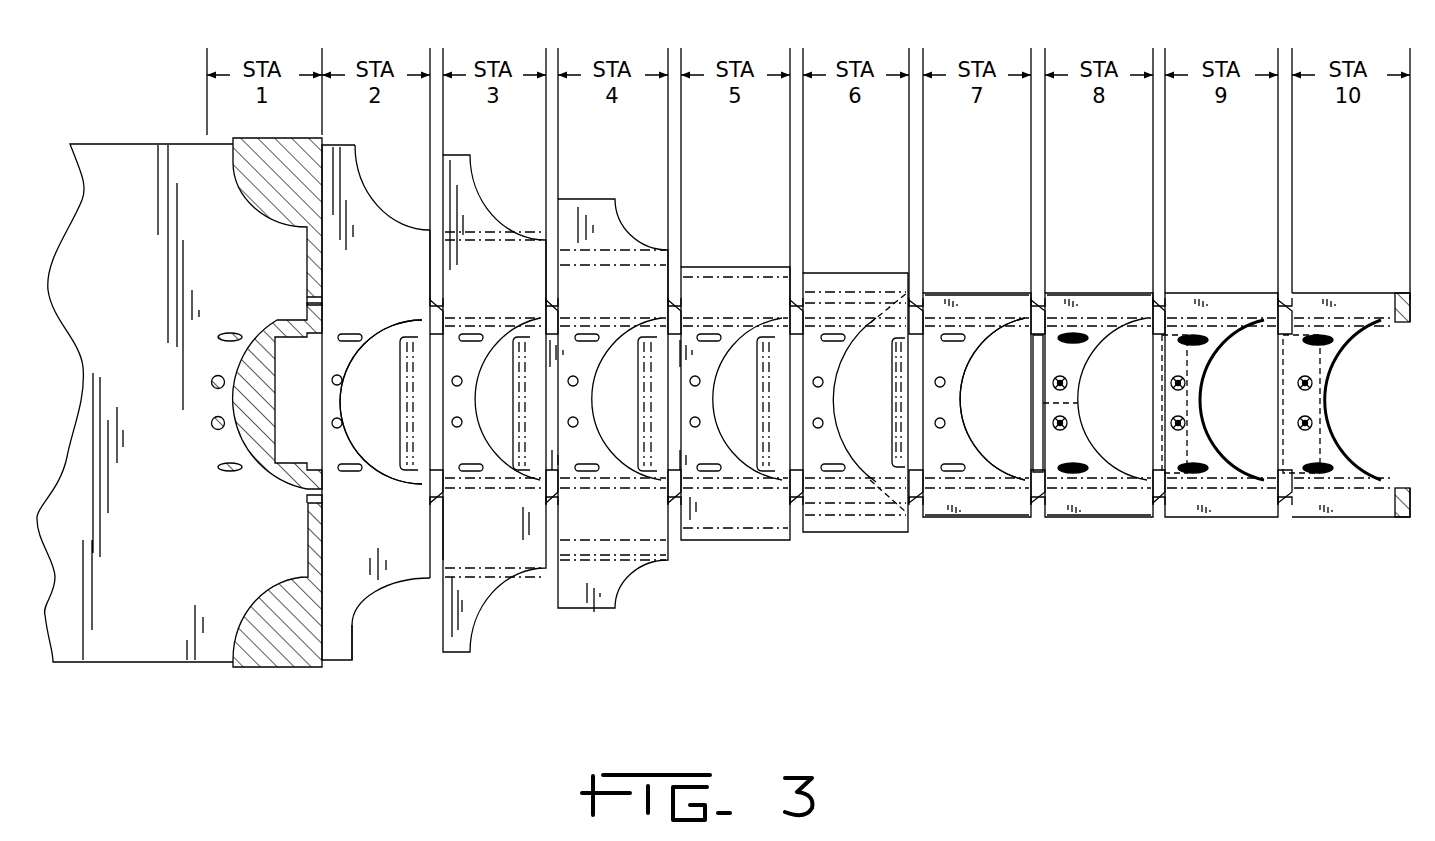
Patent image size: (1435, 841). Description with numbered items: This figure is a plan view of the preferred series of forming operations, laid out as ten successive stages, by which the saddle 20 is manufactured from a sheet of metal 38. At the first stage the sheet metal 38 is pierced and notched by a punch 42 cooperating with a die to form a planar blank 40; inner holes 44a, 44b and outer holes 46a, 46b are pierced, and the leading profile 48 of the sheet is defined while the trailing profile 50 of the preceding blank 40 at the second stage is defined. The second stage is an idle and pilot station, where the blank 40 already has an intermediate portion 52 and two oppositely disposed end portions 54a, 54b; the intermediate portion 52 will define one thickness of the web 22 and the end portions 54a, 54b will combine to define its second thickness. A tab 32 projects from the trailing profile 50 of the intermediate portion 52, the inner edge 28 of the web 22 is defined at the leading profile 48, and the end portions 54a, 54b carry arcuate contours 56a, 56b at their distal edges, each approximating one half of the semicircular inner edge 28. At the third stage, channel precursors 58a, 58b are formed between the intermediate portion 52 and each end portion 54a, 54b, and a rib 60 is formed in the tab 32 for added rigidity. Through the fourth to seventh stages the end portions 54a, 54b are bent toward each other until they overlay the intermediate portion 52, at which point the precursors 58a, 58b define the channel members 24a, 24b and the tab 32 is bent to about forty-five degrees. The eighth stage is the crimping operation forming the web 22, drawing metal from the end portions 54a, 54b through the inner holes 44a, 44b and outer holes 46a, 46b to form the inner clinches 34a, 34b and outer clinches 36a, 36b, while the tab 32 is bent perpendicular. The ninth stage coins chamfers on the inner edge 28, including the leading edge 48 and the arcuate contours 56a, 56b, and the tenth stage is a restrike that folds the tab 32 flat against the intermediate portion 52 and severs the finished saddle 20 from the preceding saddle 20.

The saddle 20 is at (1342, 533).
The web 22 is at (1067, 443).
The channel member 24a is at (980, 520).
The channel member 24b is at (968, 293).
The inner edge 28 is at (368, 425).
The tab 32 is at (414, 322).
The inner clinch 34a is at (1052, 423).
The inner clinch 34b is at (1052, 383).
The outer clinch 36a is at (1078, 464).
The outer clinch 36b is at (1078, 343).
The sheet of metal 38 is at (107, 632).
The planar blank 40 is at (337, 672).
The punch 42 is at (258, 657).
The inner hole 44a is at (332, 422).
The inner hole 44b is at (332, 380).
The outer hole 46a is at (352, 472).
The outer hole 46b is at (348, 333).
The leading profile 48 is at (370, 635).
The trailing profile 50 is at (433, 622).
The intermediate portion 52 is at (343, 357).
The end portion 54a is at (348, 598).
The end portion 54b is at (340, 176).
The arcuate contour 56a is at (368, 637).
The arcuate contour 56b is at (389, 208).
The channel precursor 58a is at (460, 546).
The channel precursor 58b is at (468, 293).
The rib 60 is at (408, 412).